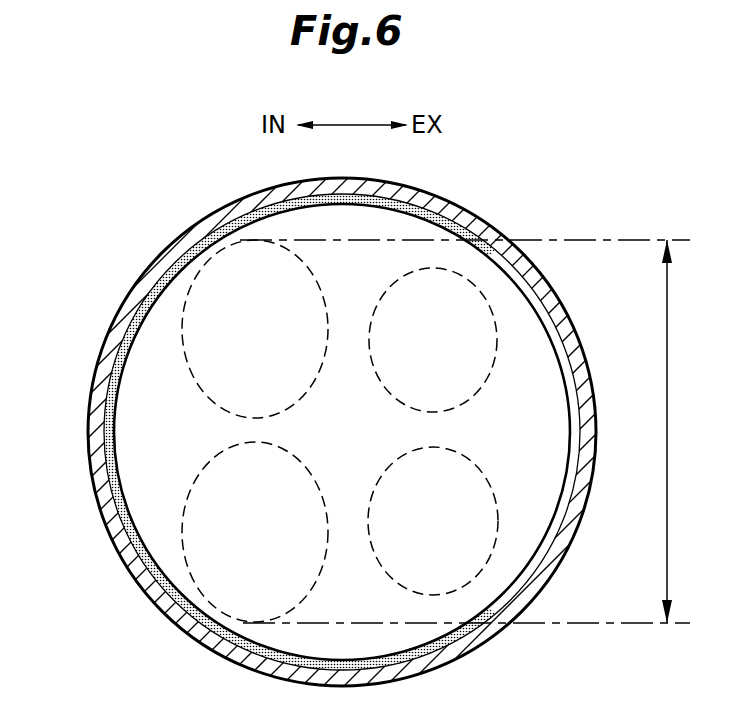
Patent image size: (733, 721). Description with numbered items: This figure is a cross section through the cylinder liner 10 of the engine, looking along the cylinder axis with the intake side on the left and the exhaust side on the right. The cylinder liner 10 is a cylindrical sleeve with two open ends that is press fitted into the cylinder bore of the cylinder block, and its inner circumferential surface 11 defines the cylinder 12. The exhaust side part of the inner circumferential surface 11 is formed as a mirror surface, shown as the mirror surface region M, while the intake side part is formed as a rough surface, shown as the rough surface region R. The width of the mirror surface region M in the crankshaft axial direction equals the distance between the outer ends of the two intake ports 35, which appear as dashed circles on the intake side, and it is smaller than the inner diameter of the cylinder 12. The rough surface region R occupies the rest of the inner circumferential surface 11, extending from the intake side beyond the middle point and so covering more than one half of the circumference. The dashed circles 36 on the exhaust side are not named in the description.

The cylinder liner 10 is at (222, 217).
The inner circumferential surface 11 is at (112, 379).
The cylinder 12 is at (120, 499).
The intake ports 35 is at (182, 323).
The second hollow portions 36 is at (498, 322).
The rough surface region R is at (115, 417).
The mirror surface region M is at (570, 418).